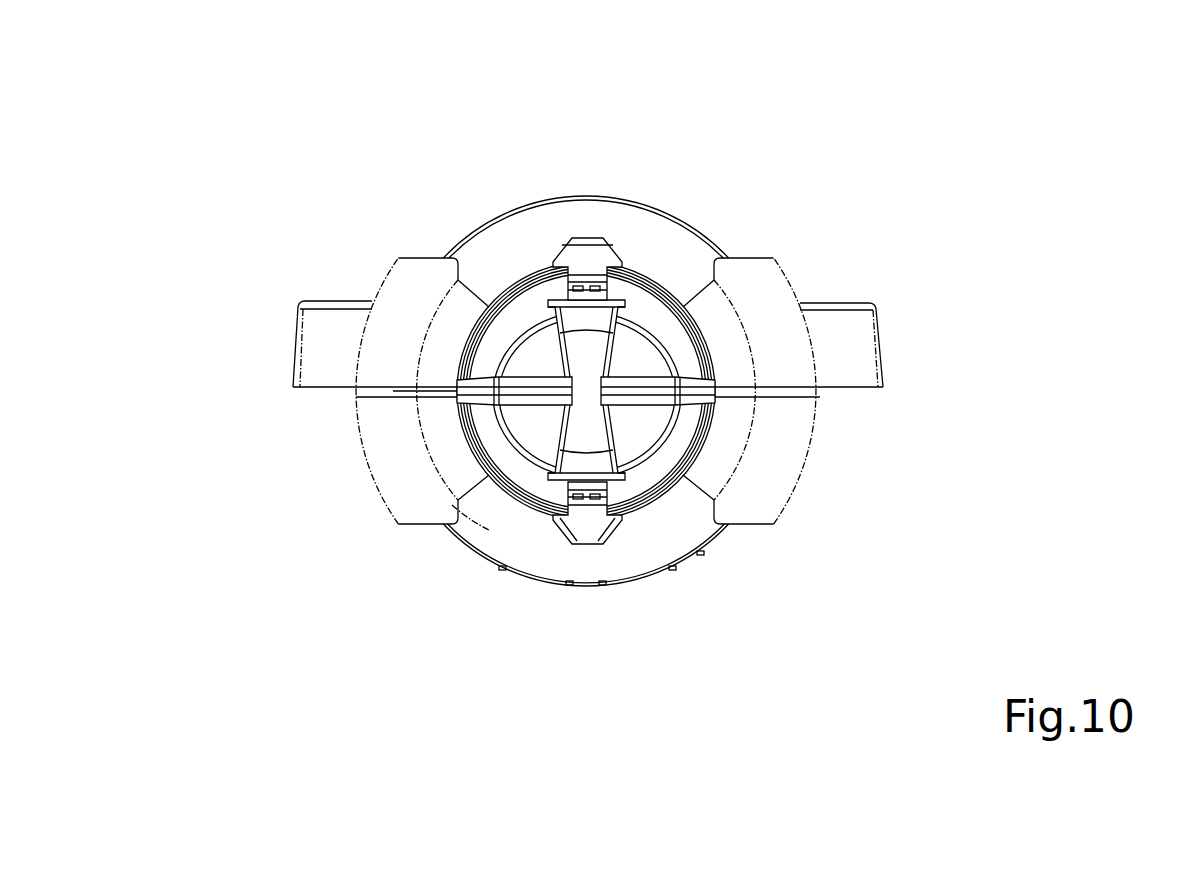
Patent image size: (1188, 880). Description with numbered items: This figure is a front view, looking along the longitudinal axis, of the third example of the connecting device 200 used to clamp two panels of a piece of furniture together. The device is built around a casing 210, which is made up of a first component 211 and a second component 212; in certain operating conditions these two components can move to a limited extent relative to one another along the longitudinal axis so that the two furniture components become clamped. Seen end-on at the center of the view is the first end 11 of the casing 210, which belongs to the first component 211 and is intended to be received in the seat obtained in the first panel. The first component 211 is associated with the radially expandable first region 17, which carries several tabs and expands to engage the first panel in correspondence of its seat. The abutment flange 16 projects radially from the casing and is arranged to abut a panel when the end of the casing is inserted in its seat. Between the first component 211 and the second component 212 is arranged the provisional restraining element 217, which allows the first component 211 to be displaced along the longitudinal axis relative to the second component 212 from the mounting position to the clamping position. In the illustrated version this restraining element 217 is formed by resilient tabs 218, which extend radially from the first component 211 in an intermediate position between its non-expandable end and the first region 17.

The connecting device 200 is at (736, 152).
The casing 210 is at (587, 186).
The first component 211 is at (470, 466).
The second component 212 is at (527, 193).
The provisional restraining element 217 is at (598, 258).
The resilient tabs 218 is at (565, 255).
The abutment flange 16 is at (283, 320).
The first region 17 is at (657, 503).
The first end 11 is at (540, 433).